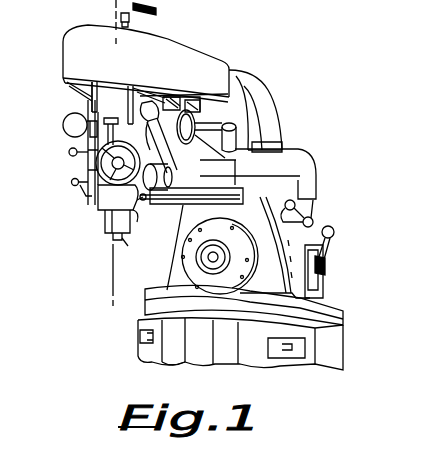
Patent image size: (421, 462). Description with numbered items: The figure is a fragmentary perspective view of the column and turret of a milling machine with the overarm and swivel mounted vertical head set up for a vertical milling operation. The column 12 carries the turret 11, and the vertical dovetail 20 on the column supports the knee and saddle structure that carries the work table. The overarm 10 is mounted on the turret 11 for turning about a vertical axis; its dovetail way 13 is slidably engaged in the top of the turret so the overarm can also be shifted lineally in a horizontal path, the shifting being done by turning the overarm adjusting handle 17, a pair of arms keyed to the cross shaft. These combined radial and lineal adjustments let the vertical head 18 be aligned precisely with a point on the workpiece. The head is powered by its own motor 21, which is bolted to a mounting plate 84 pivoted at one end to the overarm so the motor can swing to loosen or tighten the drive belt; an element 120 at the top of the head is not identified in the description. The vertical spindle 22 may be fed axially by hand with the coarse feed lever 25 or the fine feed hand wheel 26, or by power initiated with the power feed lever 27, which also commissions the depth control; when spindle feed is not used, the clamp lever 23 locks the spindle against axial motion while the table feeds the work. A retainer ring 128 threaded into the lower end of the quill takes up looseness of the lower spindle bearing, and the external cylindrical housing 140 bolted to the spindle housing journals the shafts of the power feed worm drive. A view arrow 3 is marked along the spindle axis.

The view direction arrow 3 is at (140, 267).
The overarm 10 is at (312, 152).
The turret 11 is at (306, 236).
The column 12 is at (334, 342).
The dovetail way 13 is at (226, 204).
The overarm adjusting handle 17 is at (295, 207).
The vertical head 18 is at (106, 106).
The vertical dovetail 20 is at (173, 348).
The motor 21 is at (266, 100).
The vertical spindle 22 is at (95, 232).
The clamp lever 23 is at (135, 210).
The coarse feed lever 25 is at (73, 185).
The fine feed hand wheel 26 is at (96, 165).
The power feed lever 27 is at (69, 151).
The mounting plate 84 is at (278, 148).
The mount 120 is at (208, 106).
The retainer ring 128 is at (128, 236).
The external cylindrical housing 140 is at (63, 124).